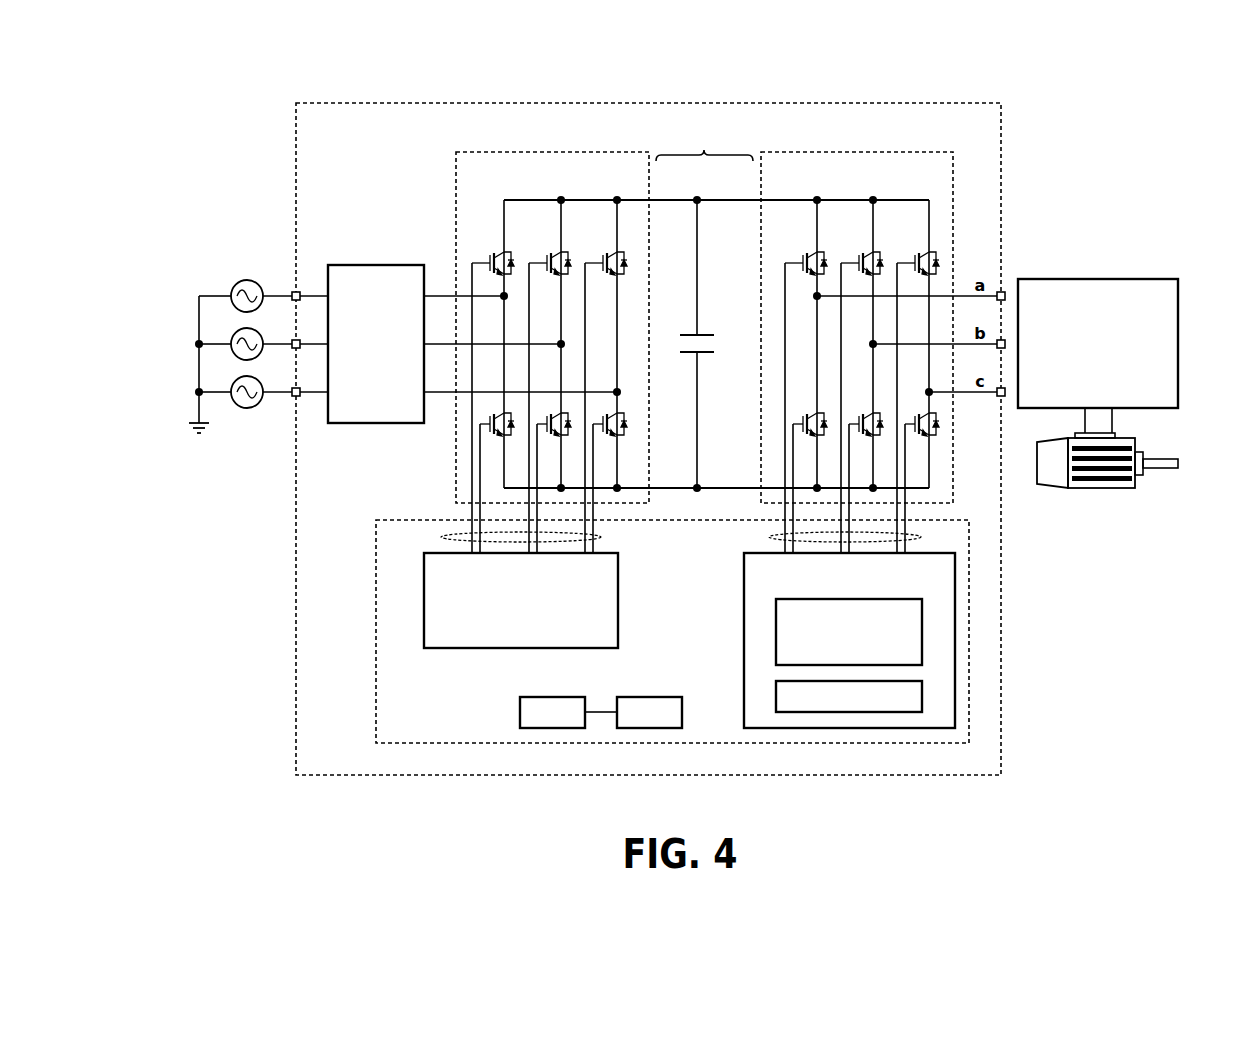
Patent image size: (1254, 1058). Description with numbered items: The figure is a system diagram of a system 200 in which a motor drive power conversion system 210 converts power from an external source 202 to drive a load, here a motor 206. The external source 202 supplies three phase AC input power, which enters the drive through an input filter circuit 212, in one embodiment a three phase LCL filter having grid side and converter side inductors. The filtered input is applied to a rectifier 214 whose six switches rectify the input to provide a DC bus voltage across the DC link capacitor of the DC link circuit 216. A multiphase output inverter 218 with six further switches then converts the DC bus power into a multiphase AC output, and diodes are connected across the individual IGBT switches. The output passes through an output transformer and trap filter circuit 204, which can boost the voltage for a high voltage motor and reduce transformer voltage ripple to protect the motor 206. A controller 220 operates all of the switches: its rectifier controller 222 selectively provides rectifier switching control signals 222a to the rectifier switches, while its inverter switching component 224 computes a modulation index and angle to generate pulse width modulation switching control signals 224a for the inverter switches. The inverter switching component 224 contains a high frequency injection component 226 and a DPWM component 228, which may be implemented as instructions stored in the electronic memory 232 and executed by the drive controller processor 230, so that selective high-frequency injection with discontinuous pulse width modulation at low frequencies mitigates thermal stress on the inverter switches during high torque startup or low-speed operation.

The system 200 is at (230, 68).
The external source 202 is at (213, 266).
The output transformer and trap filter circuit 204 is at (1097, 279).
The motor 206 is at (1132, 437).
The motor drive power conversion system 210 is at (358, 103).
The input filter circuit 212 is at (377, 265).
The rectifier 214 is at (552, 152).
The DC link circuit 216 is at (708, 152).
The inverter 218 is at (860, 152).
The controller 220 is at (376, 722).
The rectifier controller 222 is at (424, 600).
The rectifier switching control signals 222a is at (458, 536).
The inverter switching component 224 is at (744, 572).
The inverter switching control signals 224a is at (775, 536).
The high frequency injection component 226 is at (776, 630).
The DPWM component 228 is at (776, 693).
The drive controller processor 230 is at (548, 697).
The electronic memory 232 is at (645, 697).